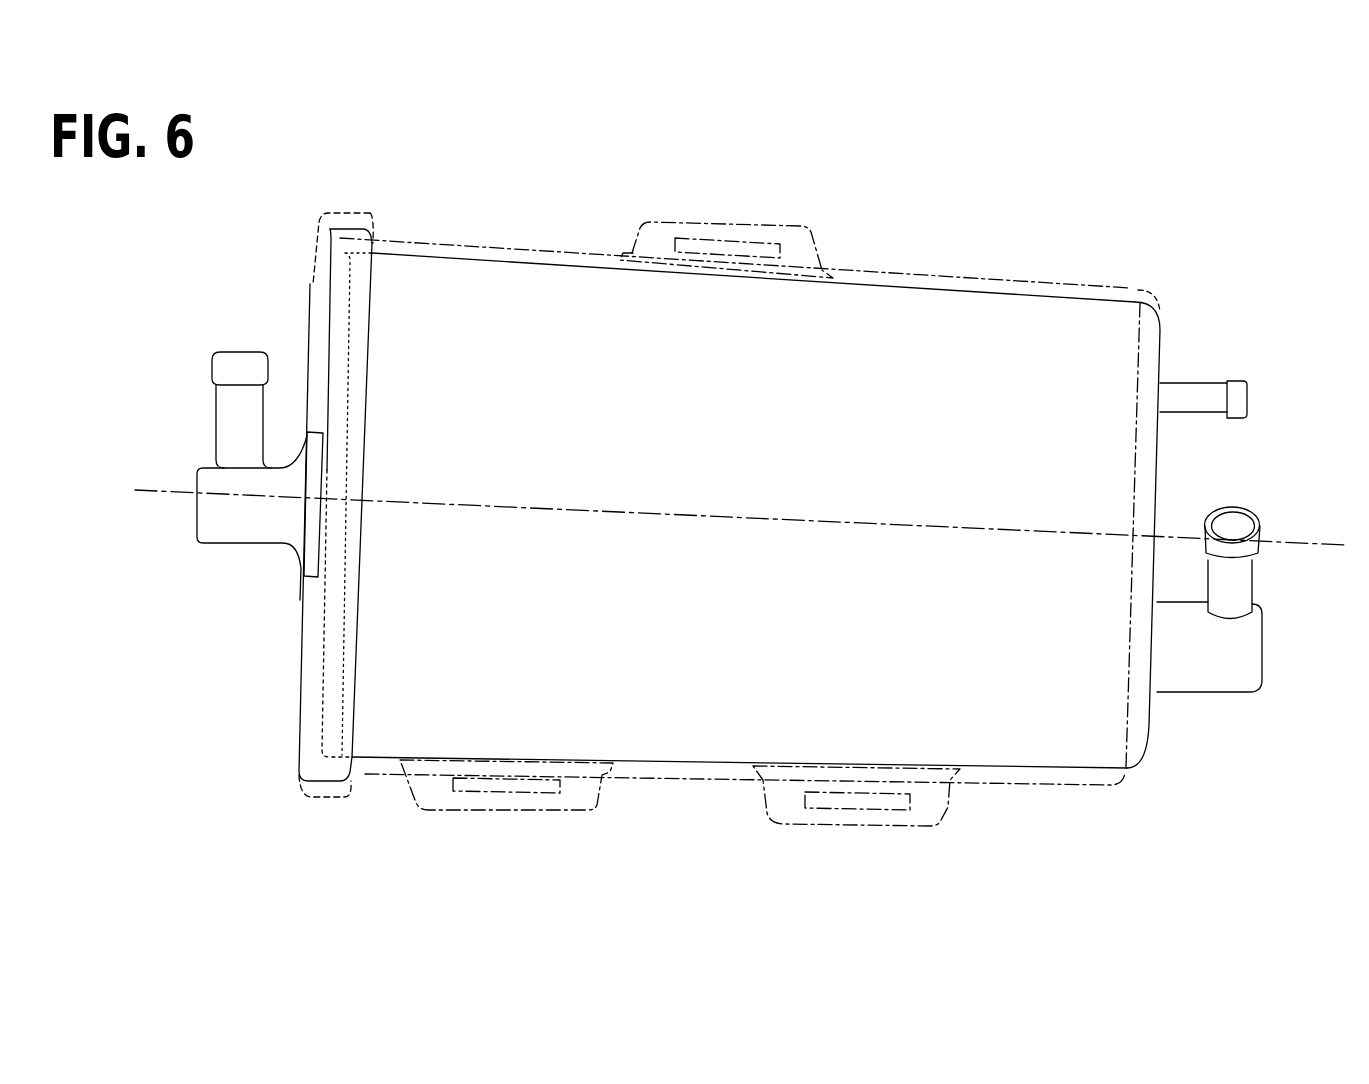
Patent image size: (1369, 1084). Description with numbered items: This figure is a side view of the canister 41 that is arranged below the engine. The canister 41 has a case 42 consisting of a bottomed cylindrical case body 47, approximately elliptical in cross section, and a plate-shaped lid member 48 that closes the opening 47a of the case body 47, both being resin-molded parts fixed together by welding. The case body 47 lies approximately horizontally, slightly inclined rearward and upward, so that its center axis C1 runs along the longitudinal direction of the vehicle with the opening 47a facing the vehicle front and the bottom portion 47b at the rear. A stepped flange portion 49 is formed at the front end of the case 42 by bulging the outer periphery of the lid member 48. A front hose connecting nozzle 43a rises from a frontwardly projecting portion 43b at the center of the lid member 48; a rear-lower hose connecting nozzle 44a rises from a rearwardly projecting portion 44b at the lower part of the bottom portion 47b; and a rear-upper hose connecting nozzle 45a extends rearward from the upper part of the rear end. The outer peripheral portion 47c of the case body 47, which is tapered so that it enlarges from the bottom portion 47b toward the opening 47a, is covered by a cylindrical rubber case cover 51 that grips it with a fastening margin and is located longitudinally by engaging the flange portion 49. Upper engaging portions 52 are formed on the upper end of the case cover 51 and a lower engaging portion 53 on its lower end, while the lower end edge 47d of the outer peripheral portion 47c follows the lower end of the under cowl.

The canister 41 is at (1078, 200).
The case 42 is at (725, 528).
The front hose connecting nozzle 43a is at (225, 413).
The frontwardly projecting portion 43b is at (238, 533).
The rear-lower hose connecting nozzle 44a is at (1243, 587).
The rearwardly projecting portion 44b is at (1222, 686).
The rear-upper hose connecting nozzle 45a is at (1207, 405).
The case body 47 is at (335, 289).
The opening 47a is at (321, 621).
The bottom portion 47b is at (1163, 357).
The outer peripheral portion 47c is at (924, 345).
The lower end edge 47d is at (692, 763).
The lid member 48 is at (304, 309).
The flange portion 49 is at (348, 231).
The case cover 51 is at (525, 242).
The upper engaging portion 52 is at (768, 219).
The lower engaging portion 53 is at (527, 813).
The center axis C1 is at (147, 494).